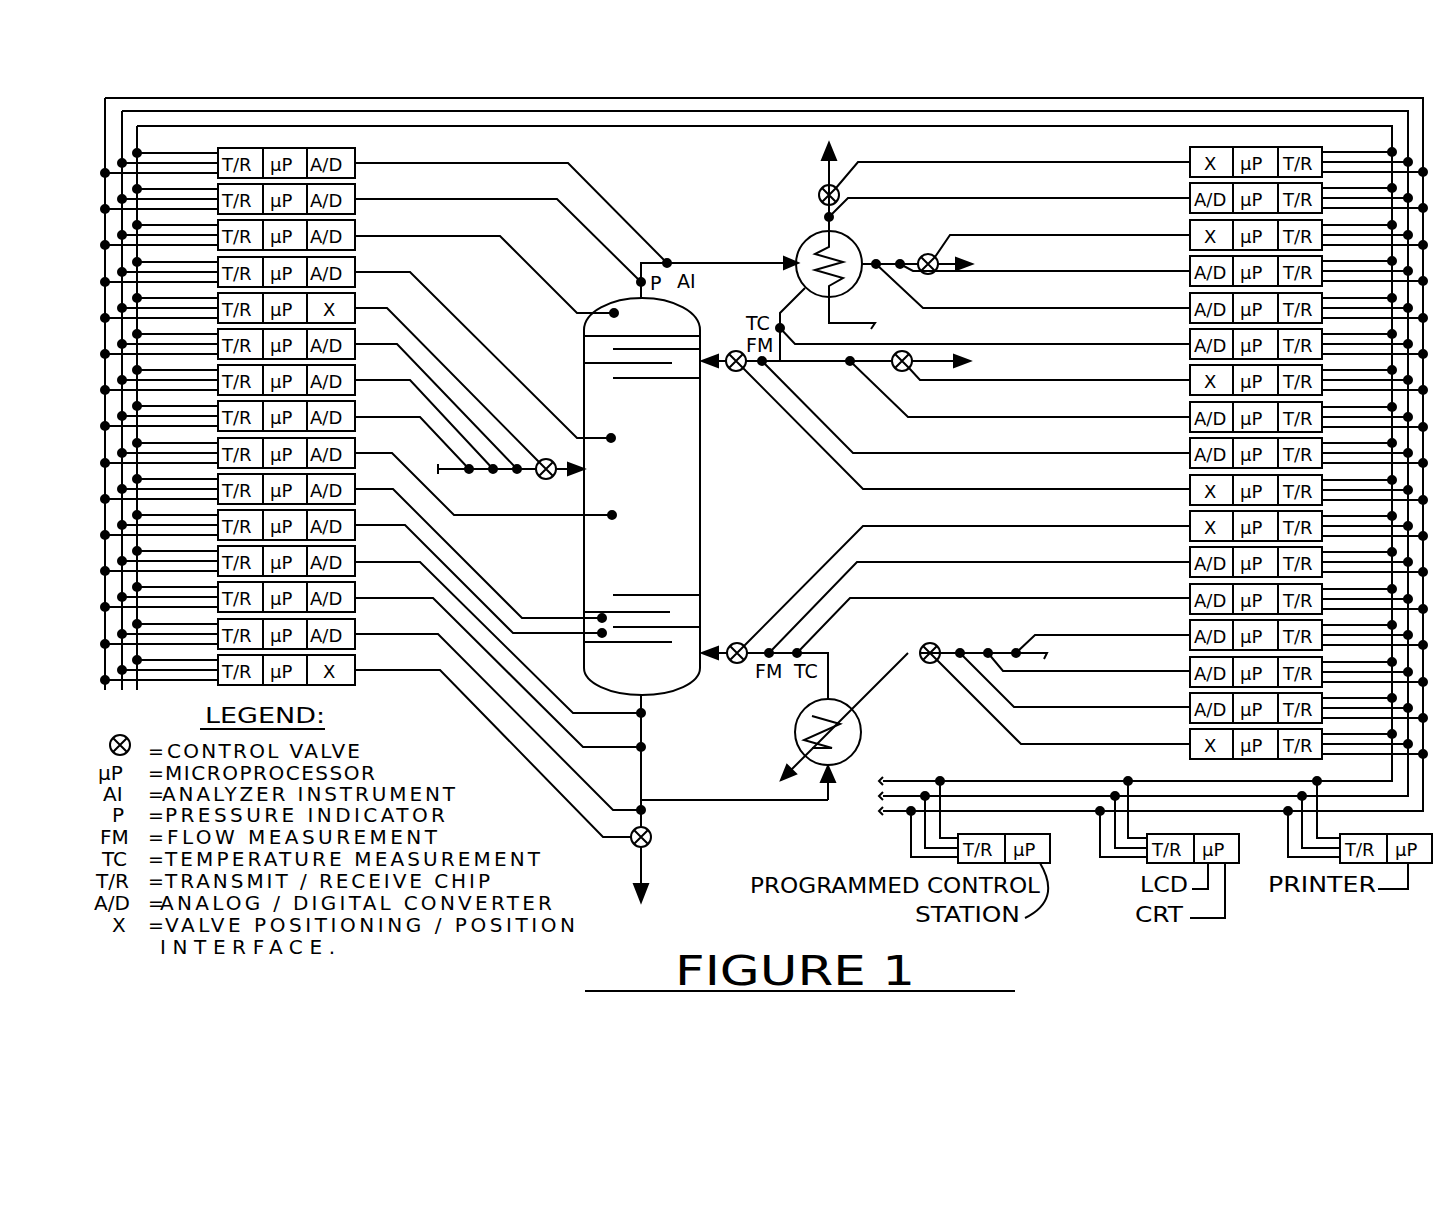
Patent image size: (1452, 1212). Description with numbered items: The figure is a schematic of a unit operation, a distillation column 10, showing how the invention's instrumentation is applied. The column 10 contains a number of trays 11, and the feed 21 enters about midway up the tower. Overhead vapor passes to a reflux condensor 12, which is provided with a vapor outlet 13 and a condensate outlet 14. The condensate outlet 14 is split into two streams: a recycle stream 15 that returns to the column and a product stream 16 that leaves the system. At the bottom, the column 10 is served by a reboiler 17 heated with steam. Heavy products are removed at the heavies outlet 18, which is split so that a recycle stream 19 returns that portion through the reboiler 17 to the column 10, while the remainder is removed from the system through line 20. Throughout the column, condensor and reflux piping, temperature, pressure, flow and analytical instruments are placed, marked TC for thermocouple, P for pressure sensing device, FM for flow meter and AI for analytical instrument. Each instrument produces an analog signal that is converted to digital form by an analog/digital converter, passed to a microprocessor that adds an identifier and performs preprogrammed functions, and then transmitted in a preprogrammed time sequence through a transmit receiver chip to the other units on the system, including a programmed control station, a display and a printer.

The distillation column 10 is at (718, 516).
The trays 11 is at (678, 578).
The reflux condensor 12 is at (790, 236).
The vapor outlet 13 is at (945, 258).
The condensate outlet 14 is at (840, 323).
The recycle stream 15 is at (738, 372).
The product stream 16 is at (935, 352).
The reboiler 17 is at (874, 726).
The heavies outlet 18 is at (641, 780).
The recycle stream 19 is at (770, 800).
The line 20 is at (641, 878).
The feed 21 is at (571, 494).